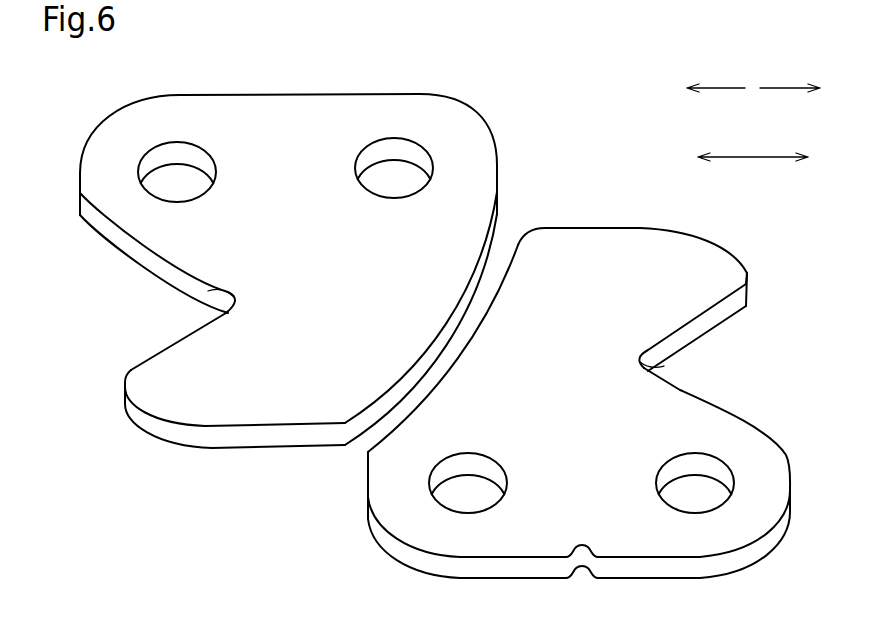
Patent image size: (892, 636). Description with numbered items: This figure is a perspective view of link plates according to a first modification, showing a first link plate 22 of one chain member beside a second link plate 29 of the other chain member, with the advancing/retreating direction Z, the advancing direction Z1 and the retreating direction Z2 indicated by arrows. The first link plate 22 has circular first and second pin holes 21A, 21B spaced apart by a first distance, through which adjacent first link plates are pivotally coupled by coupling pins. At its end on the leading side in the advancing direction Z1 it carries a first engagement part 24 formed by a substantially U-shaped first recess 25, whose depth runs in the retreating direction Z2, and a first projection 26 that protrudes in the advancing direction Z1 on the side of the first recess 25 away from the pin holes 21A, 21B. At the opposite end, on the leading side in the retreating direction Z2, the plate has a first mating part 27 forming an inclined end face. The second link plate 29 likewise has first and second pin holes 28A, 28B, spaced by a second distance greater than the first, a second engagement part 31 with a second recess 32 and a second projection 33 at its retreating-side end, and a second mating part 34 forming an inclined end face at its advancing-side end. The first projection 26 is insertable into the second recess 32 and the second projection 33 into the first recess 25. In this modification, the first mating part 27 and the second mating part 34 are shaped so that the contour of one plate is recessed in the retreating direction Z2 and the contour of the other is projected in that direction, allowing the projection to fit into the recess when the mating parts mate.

The first pin hole 21A is at (168, 155).
The second pin hole 21B is at (385, 152).
The first link plate 22 is at (485, 85).
The first engagement part 24 is at (140, 283).
The first recess 25 is at (207, 290).
The first projection 26 is at (160, 343).
The first mating part 27 is at (440, 330).
The first pin hole 28A is at (677, 475).
The second pin hole 28B is at (467, 463).
The second link plate 29 is at (356, 558).
The second engagement part 31 is at (731, 325).
The second recess 32 is at (657, 363).
The second projection 33 is at (748, 280).
The second mating part 34 is at (443, 372).
The advancing/retreating direction Z is at (753, 141).
The advancing direction Z1 is at (716, 71).
The retreating direction Z2 is at (790, 71).